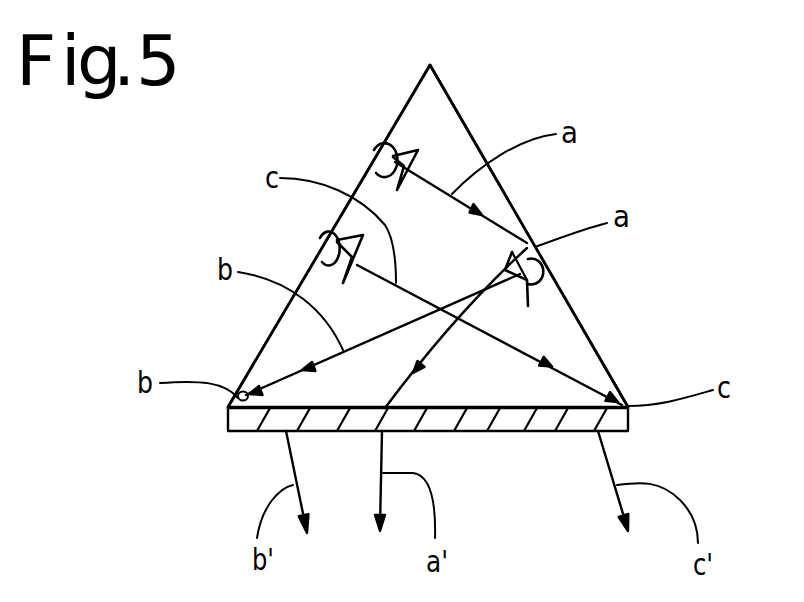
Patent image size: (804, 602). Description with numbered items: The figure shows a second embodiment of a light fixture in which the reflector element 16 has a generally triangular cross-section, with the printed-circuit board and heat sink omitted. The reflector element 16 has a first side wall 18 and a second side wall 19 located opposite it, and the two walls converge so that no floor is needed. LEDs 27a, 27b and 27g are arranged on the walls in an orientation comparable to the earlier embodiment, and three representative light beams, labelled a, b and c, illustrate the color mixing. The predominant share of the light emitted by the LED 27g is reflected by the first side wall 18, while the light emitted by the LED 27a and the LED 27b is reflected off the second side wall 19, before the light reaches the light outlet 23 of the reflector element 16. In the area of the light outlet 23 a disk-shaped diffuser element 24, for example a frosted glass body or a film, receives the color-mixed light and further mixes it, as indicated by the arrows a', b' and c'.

The reflector element 16 is at (462, 215).
The first side wall 18 is at (258, 353).
The second side wall 19 is at (512, 203).
The light outlet 23 is at (478, 432).
The diffuser element 24 is at (546, 432).
The LED 27a is at (327, 245).
The LED 27b is at (377, 153).
The LED 27g is at (548, 270).